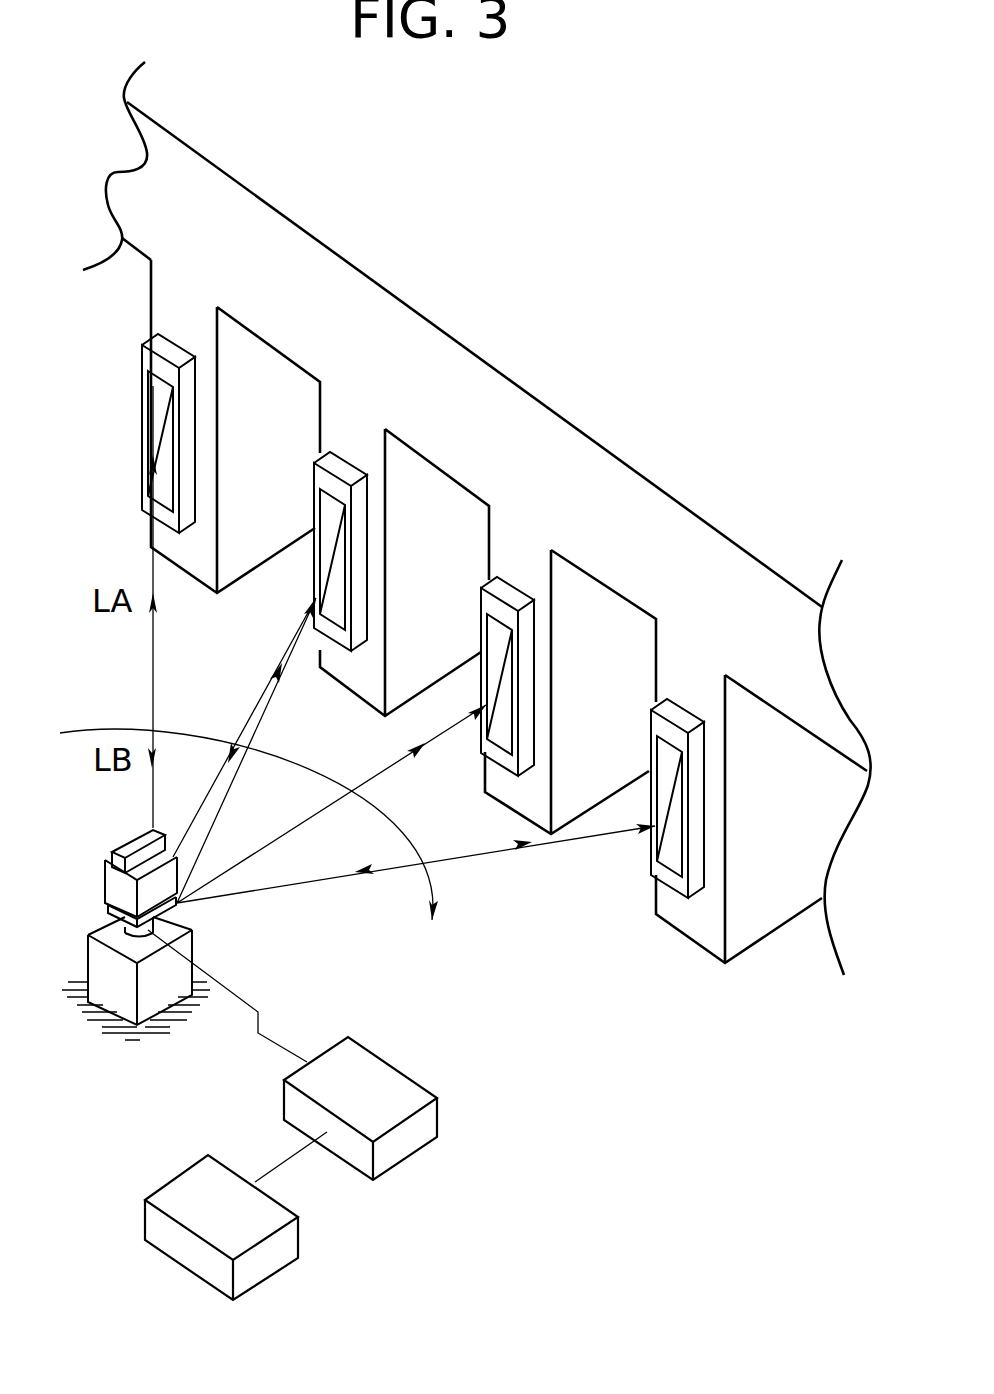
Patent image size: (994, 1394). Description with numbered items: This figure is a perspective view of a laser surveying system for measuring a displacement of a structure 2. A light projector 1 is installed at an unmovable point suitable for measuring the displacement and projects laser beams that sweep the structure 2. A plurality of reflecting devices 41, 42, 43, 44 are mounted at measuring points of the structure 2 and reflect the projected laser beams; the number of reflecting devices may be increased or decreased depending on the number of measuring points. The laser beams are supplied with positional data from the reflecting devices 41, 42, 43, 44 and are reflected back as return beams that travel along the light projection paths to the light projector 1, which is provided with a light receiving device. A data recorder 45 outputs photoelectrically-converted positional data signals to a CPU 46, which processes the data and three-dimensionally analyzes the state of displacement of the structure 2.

The light projector 1 is at (110, 882).
The structure 2 is at (551, 422).
The reflecting device 41 is at (175, 347).
The reflecting device 42 is at (338, 473).
The reflecting device 43 is at (507, 592).
The reflecting device 44 is at (678, 720).
The data recorder 45 is at (378, 1072).
The CPU 46 is at (273, 1263).